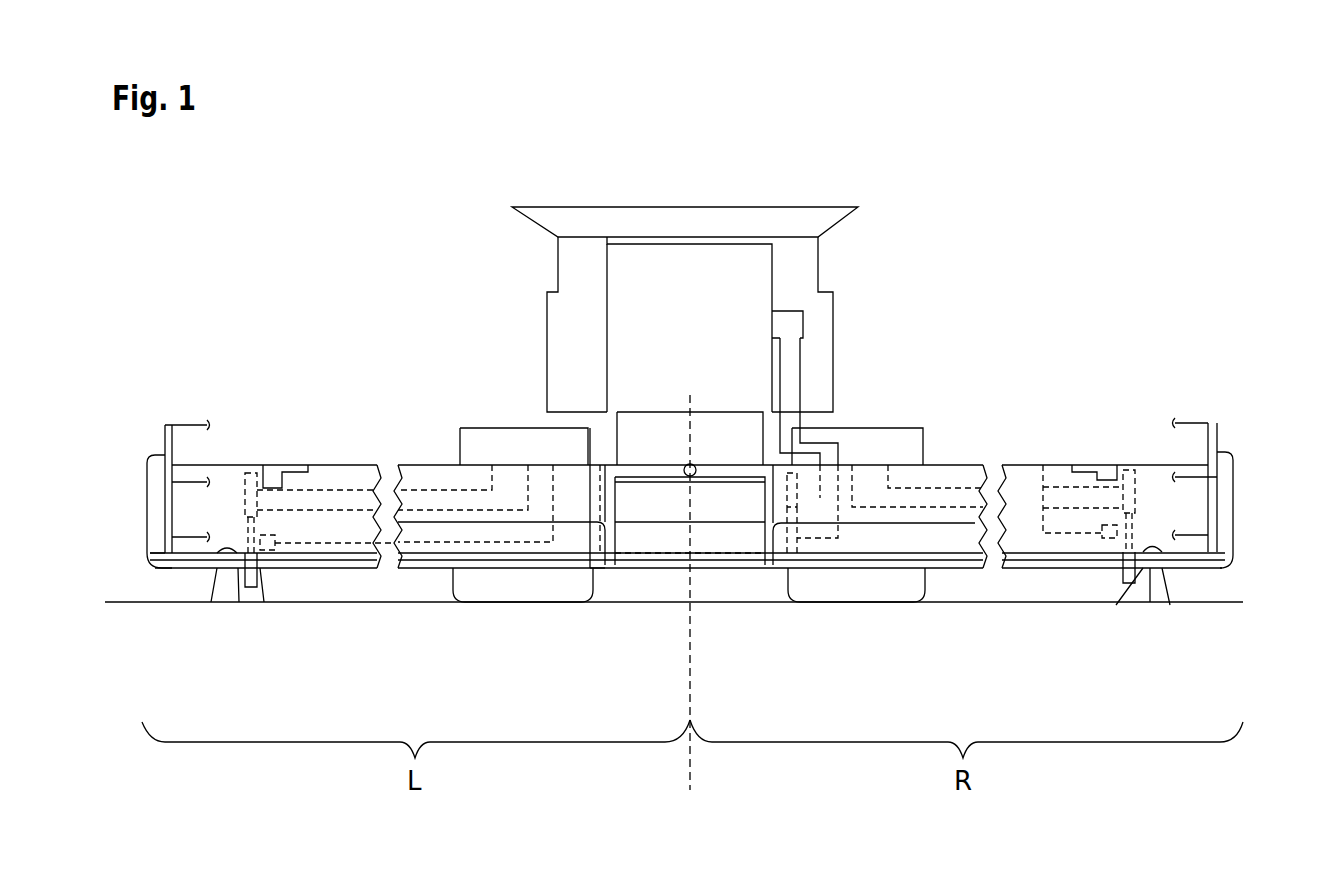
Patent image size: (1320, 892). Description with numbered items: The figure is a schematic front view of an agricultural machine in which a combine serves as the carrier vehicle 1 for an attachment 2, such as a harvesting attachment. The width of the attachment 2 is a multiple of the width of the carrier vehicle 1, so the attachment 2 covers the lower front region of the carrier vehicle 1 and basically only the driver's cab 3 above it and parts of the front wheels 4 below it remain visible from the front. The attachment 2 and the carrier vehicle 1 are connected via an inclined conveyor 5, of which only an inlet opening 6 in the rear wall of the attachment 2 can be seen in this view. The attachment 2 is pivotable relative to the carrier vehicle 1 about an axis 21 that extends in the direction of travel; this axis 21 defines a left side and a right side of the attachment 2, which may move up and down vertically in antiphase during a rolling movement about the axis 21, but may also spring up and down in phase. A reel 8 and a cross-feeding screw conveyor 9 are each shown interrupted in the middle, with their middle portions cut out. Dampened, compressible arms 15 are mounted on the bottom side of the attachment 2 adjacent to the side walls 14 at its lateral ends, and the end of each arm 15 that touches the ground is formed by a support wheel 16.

The carrier vehicle 1 is at (700, 192).
The attachment 2 is at (1267, 438).
The driver's cab 3 is at (642, 282).
The front wheels 4 is at (526, 582).
The inclined conveyor 5 is at (656, 536).
The inlet opening 6 is at (644, 508).
The reel 8 is at (184, 423).
The cross-feeding screw conveyor 9 is at (574, 540).
The side walls 14 is at (153, 492).
The arms 15 is at (250, 590).
The support wheel 16 is at (222, 584).
The axis 21 is at (693, 478).